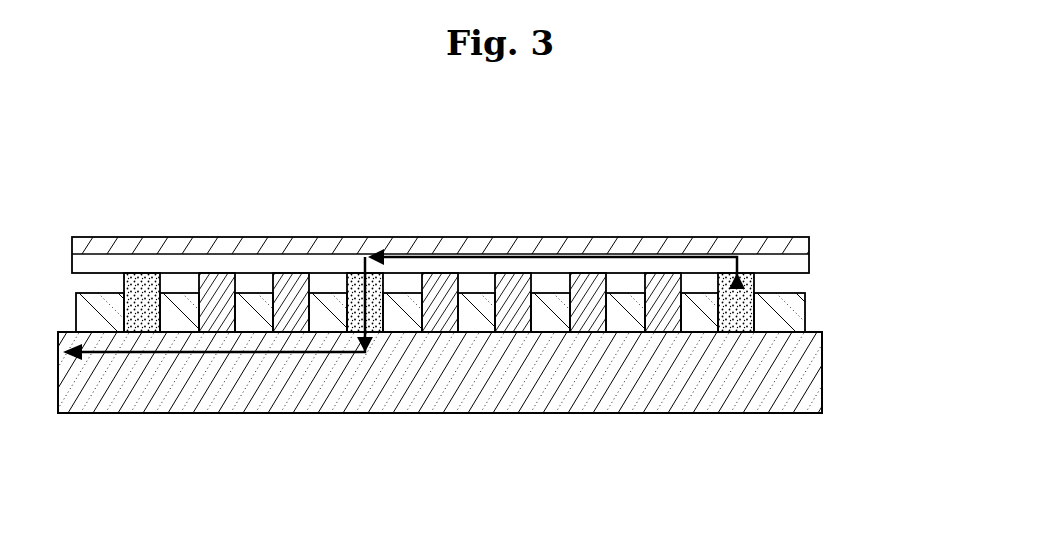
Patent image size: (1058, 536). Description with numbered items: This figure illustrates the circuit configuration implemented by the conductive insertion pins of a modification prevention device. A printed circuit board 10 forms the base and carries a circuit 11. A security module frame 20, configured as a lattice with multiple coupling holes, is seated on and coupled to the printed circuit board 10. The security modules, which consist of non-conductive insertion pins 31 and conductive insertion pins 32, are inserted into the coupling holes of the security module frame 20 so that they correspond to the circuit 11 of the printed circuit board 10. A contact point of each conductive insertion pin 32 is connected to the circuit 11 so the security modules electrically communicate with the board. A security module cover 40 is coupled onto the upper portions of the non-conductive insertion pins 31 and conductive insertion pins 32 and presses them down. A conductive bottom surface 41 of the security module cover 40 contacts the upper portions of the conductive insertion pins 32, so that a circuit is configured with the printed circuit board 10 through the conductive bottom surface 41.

The printed circuit board 10 is at (822, 372).
The circuit 11 is at (222, 356).
The security module frame 20 is at (807, 315).
The non-conductive insertion pin 31 is at (438, 287).
The conductive insertion pin 32 is at (147, 287).
The security module cover 40 is at (607, 237).
The conductive bottom surface 41 is at (787, 275).